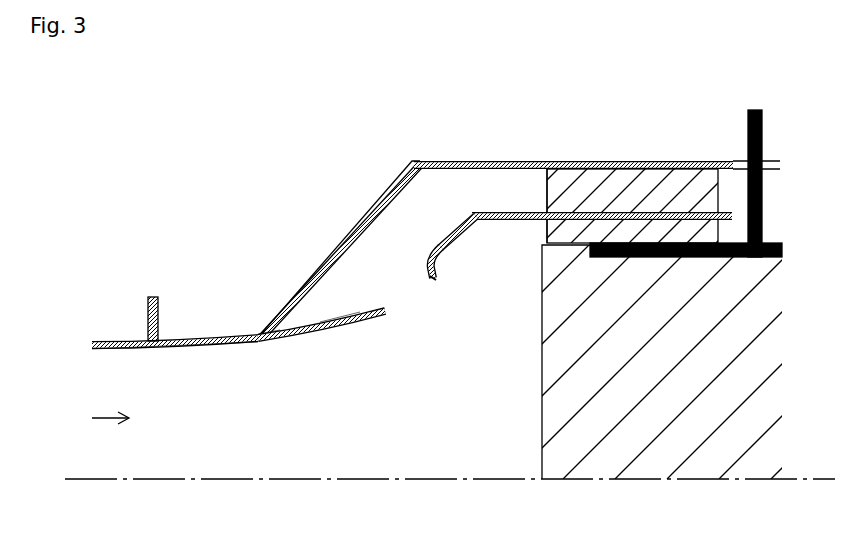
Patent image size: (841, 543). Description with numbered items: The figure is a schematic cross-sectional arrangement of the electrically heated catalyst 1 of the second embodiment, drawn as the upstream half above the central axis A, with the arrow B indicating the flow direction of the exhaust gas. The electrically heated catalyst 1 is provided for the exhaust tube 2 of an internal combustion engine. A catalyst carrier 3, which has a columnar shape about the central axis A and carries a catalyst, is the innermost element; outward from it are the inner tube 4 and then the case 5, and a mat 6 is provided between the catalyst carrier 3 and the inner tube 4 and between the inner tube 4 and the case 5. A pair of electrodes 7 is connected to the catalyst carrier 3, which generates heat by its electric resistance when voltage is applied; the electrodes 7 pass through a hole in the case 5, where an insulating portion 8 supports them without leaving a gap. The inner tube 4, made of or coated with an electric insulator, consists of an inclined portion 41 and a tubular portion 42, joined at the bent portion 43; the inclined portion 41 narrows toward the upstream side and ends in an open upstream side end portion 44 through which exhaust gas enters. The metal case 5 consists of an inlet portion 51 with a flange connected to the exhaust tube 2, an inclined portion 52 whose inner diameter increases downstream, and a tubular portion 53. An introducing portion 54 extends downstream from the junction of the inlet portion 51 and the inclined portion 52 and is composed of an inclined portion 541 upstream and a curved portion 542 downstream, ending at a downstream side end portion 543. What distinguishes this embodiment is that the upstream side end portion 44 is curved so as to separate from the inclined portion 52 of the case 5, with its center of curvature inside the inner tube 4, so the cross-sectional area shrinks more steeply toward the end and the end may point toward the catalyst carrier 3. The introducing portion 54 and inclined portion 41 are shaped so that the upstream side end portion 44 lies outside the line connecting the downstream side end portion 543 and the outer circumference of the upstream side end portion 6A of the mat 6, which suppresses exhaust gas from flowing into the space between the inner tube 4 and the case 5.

The electrically heated catalyst 1 is at (240, 161).
The exhaust tube 2 is at (120, 340).
The catalyst carrier 3 is at (598, 458).
The inner tube 4 is at (578, 230).
The inclined portion 41 is at (450, 250).
The tubular portion 42 is at (510, 212).
The bent portion 43 is at (472, 223).
The upstream side end portion 44 is at (433, 284).
The case 5 is at (412, 243).
The inlet portion 51 is at (187, 338).
The inclined portion 52 is at (375, 208).
The tubular portion 53 is at (618, 160).
The introducing portion 54 is at (307, 327).
The inclined portion 541 is at (270, 328).
The curved portion 542 is at (345, 308).
The downstream side end portion 543 is at (396, 305).
The mat 6 is at (623, 235).
The upstream side end portion 6A is at (545, 208).
The electrodes 7 is at (762, 137).
The insulating portion 8 is at (738, 160).
The central axis A is at (90, 480).
The flow direction of the exhaust gas B is at (96, 420).